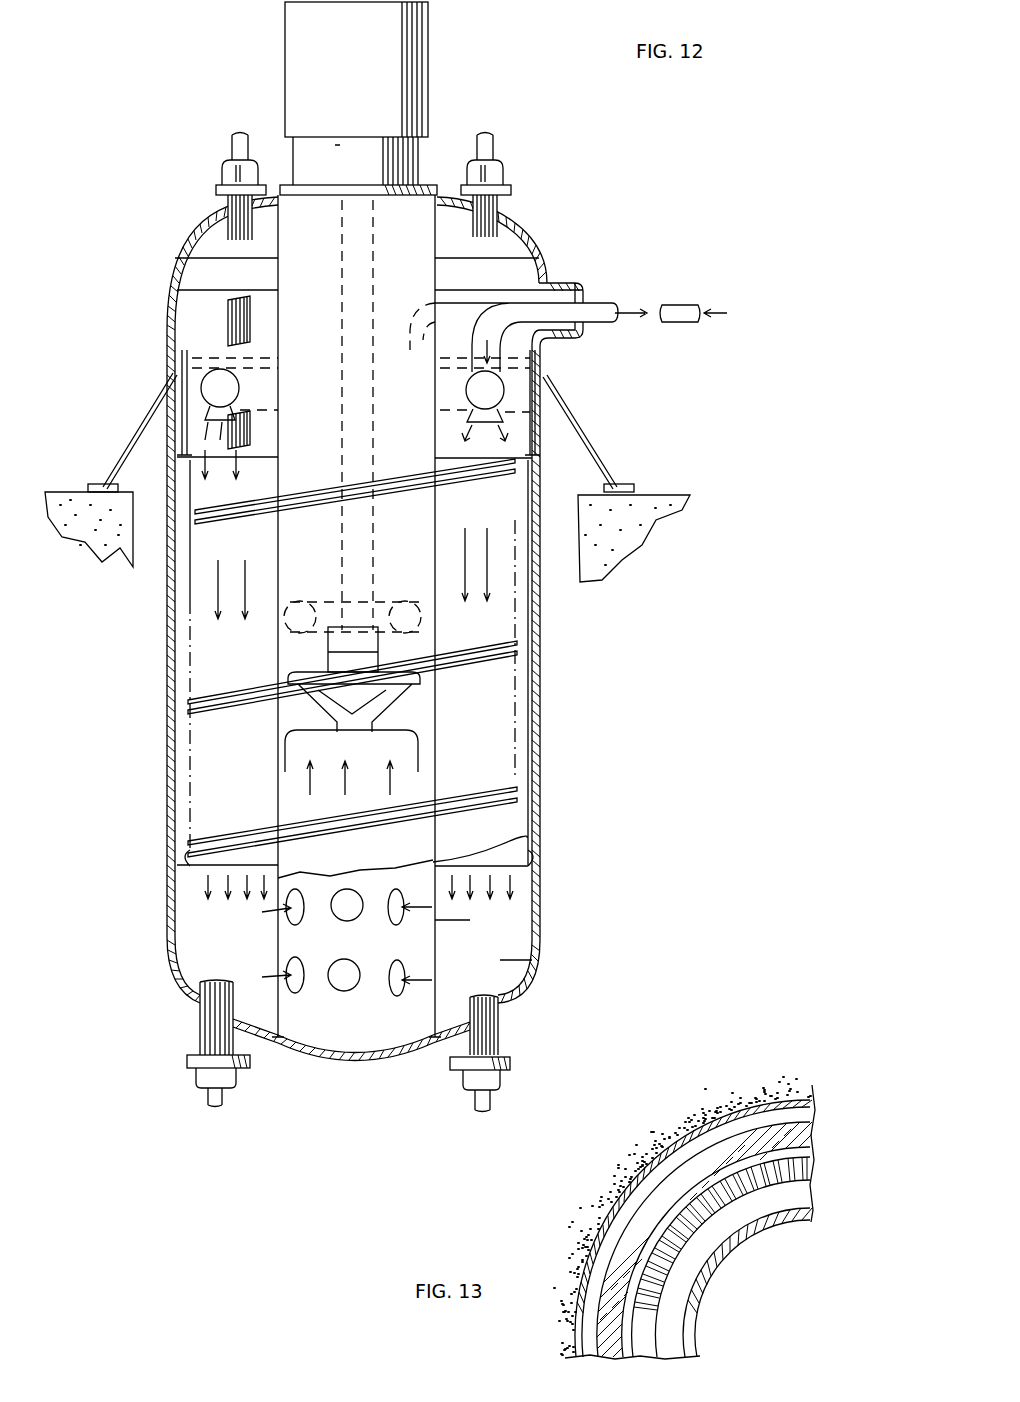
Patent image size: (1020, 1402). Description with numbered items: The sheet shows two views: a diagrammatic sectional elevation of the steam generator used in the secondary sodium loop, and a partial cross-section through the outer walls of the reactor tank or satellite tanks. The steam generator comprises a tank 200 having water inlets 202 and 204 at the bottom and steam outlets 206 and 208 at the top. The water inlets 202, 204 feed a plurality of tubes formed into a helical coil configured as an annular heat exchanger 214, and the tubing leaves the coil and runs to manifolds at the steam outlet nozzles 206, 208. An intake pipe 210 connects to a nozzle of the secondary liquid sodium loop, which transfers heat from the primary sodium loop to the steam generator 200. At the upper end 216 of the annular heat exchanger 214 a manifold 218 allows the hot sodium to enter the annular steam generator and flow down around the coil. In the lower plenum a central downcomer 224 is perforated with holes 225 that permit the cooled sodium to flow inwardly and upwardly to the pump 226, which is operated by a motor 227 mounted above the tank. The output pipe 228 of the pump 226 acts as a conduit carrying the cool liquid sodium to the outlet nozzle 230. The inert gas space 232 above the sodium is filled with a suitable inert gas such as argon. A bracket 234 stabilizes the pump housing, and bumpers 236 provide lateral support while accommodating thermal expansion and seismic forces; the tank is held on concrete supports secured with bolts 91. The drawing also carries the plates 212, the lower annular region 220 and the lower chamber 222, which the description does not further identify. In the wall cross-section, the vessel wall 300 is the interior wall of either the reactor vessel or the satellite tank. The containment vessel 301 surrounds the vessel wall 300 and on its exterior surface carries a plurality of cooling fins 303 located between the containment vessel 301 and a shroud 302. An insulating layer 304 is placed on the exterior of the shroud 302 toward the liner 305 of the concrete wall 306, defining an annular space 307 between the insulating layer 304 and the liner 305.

In FIG. 12, the bolts 91 is at (102, 484).
In FIG. 12, the tank 200 is at (370, 629).
In FIG. 12, the water inlet 202 is at (505, 1038).
In FIG. 12, the water inlet 204 is at (199, 1028).
In FIG. 12, the steam outlet 206 is at (500, 170).
In FIG. 12, the steam outlet 208 is at (222, 168).
In FIG. 12, the intake pipe 210 is at (682, 305).
In FIG. 12, the baffle plates 212 is at (210, 718).
In FIG. 12, the annular heat exchanger 214 is at (523, 636).
In FIG. 12, the upper end 216 is at (270, 459).
In FIG. 12, the manifold 218 is at (200, 389).
In FIG. 12, the lower annular space 220 is at (182, 874).
In FIG. 12, the lower chamber 222 is at (517, 940).
In FIG. 12, the central downcomer 224 is at (515, 842).
In FIG. 12, the holes 225 is at (367, 992).
In FIG. 12, the pump 226 is at (300, 672).
In FIG. 12, the motor 227 is at (410, 60).
In FIG. 12, the output pipe 228 is at (424, 330).
In FIG. 12, the outlet nozzle 230 is at (578, 296).
In FIG. 12, the inert gas space 232 is at (190, 322).
In FIG. 12, the bracket 234 is at (192, 270).
In FIG. 12, the bumpers 236 is at (180, 853).
In FIG. 13, the vessel wall 300 is at (787, 1218).
In FIG. 13, the containment vessel 301 is at (800, 1208).
In FIG. 13, the shroud 302 is at (806, 1160).
In FIG. 13, the cooling fins 303 is at (793, 1186).
In FIG. 13, the insulating layer 304 is at (805, 1135).
In FIG. 13, the liner 305 is at (652, 1155).
In FIG. 13, the concrete wall 306 is at (580, 1248).
In FIG. 13, the annular space 307 is at (793, 1115).